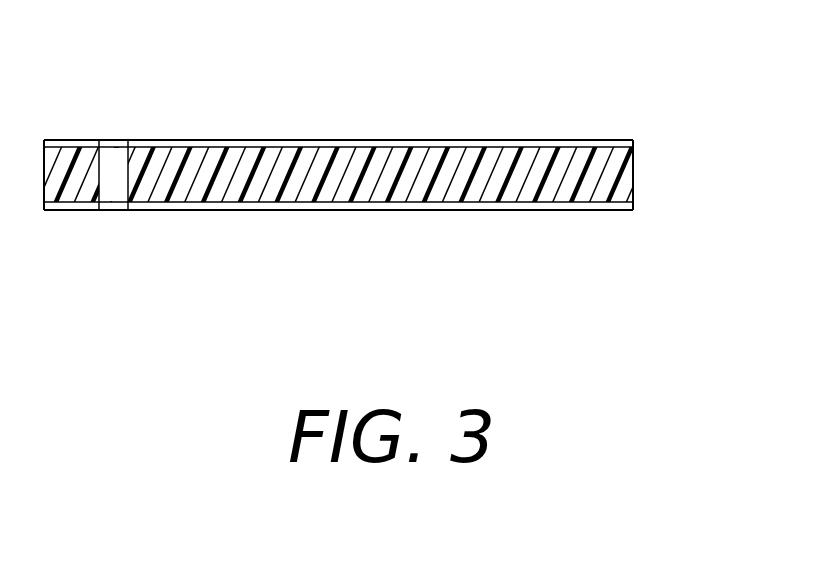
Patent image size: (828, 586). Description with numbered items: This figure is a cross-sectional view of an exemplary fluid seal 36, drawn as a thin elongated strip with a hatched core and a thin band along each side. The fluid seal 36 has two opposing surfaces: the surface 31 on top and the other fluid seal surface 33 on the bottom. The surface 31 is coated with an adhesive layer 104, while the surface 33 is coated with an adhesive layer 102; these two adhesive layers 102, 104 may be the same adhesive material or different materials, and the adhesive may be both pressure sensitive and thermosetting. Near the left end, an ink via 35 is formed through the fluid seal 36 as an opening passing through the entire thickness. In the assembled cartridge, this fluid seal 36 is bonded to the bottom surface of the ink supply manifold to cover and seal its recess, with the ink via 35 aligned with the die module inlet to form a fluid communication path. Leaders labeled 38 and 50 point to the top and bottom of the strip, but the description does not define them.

The surface 31 is at (488, 148).
The fluid seal surface 33 is at (490, 190).
The ink via 35 is at (112, 166).
The fluid seal 36 is at (635, 172).
The top surface 38 is at (345, 140).
The bottom surface 50 is at (65, 210).
The adhesive layer 102 is at (213, 210).
The adhesive layer 104 is at (215, 139).